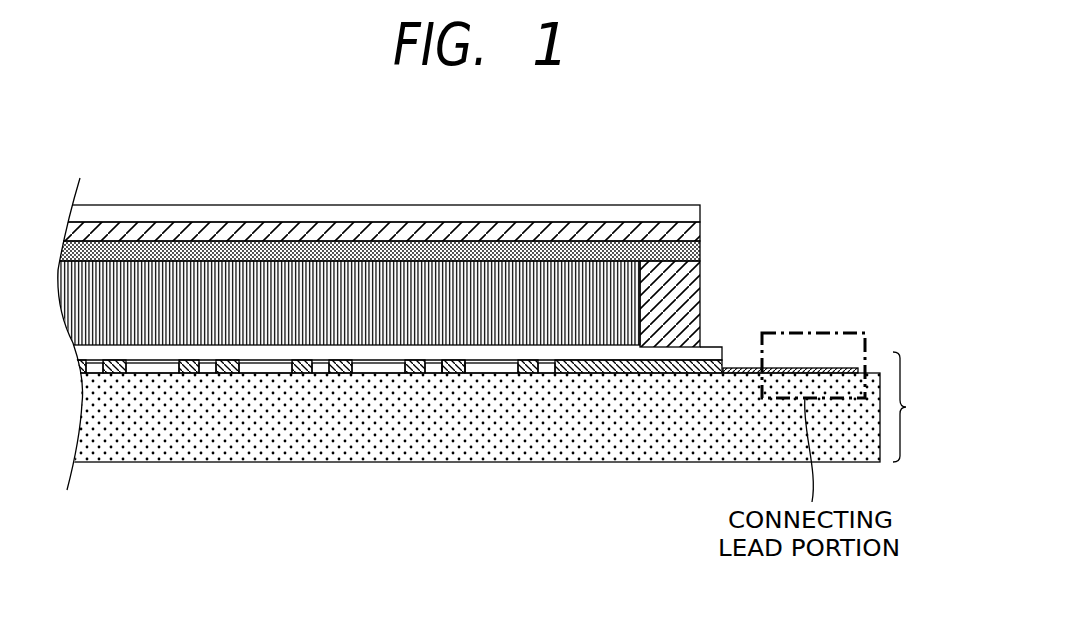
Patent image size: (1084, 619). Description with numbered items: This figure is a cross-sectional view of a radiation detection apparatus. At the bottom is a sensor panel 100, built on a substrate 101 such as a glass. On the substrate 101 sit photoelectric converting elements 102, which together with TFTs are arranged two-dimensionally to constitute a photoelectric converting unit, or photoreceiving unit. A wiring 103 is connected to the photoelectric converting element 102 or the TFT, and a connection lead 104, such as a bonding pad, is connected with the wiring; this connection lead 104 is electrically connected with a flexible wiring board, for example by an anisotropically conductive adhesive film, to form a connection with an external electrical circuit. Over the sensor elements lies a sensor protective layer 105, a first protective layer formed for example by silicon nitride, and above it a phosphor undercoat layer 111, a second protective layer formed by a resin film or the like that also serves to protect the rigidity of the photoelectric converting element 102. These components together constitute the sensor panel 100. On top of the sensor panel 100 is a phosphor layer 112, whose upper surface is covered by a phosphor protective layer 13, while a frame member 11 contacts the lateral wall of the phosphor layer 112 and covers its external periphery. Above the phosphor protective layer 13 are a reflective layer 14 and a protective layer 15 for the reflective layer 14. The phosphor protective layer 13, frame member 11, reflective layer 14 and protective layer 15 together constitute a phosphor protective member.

The sensor panel 100 is at (926, 407).
The substrate 101 is at (147, 442).
The photoelectric converting element 102 is at (257, 373).
The wiring 103 is at (320, 373).
The connection lead 104 is at (810, 370).
The sensor protective layer 105 is at (451, 373).
The frame member 11 is at (688, 297).
The phosphor undercoat layer 111 is at (137, 350).
The phosphor layer 112 is at (227, 277).
The phosphor protective layer 13 is at (330, 250).
The reflective layer 14 is at (427, 233).
The protective layer 15 is at (522, 215).